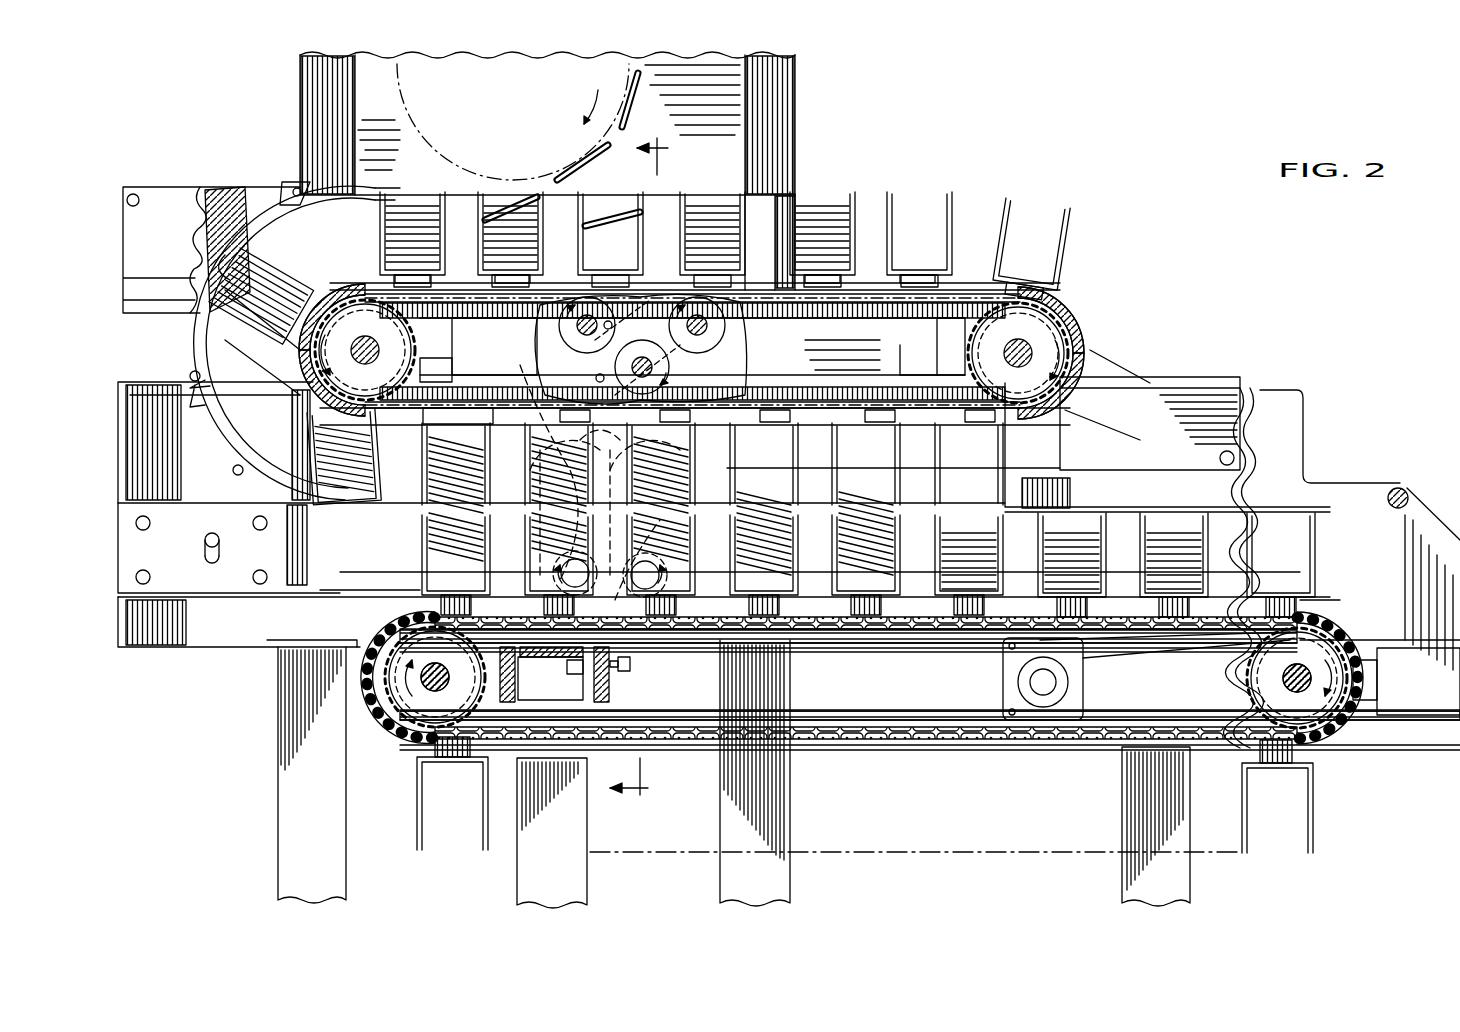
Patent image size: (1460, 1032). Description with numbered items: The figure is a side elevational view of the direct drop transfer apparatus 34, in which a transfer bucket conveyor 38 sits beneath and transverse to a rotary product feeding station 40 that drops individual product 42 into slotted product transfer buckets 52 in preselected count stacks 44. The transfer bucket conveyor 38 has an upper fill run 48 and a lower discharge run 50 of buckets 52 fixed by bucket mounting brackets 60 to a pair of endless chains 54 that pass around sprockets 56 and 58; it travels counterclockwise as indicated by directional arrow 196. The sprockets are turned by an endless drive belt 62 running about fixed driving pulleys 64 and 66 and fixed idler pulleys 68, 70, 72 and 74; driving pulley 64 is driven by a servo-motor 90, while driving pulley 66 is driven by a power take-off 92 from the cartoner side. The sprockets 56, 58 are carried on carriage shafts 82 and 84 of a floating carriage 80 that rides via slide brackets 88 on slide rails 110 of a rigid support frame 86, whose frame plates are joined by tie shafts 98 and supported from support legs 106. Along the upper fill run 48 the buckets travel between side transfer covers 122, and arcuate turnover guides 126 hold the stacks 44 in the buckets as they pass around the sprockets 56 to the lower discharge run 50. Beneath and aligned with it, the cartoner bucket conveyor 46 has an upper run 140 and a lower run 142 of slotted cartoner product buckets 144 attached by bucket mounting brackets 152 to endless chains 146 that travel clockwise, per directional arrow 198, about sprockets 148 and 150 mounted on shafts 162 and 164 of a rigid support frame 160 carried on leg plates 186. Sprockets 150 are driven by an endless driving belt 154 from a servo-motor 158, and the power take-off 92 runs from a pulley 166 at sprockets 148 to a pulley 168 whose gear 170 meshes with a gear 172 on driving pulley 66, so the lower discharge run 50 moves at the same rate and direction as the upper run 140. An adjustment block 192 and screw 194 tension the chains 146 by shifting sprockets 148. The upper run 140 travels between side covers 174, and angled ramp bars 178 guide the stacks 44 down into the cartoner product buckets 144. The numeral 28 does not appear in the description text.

The housing block 28 is at (442, 364).
The direct drop transfer apparatus 34 is at (1205, 220).
The transfer bucket conveyor 38 is at (1145, 304).
The product feeding station 40 is at (498, 100).
The individual product 42 is at (636, 102).
The preselected count stacks 44 is at (418, 200).
The cartoner bucket conveyor 46 is at (1328, 495).
The upper fill run 48 is at (1086, 252).
The lower discharge run 50 is at (1020, 485).
The product transfer buckets 52 is at (380, 224).
The endless chains 54 is at (820, 280).
The sprocket 56 is at (300, 385).
The sprocket 58 is at (1060, 340).
The bucket mounting brackets 60 is at (900, 280).
The endless drive belt 62 is at (578, 275).
The fixed driving pulley 64 is at (615, 375).
The fixed driving pulley 66 is at (668, 600).
The fixed idler pulley 68 is at (728, 330).
The fixed idler pulley 70 is at (560, 323).
The fixed idler pulley 72 is at (525, 392).
The fixed idler pulley 74 is at (715, 468).
The floating carriage 80 is at (835, 355).
The carriage shaft 82 is at (365, 345).
The carriage shaft 84 is at (1014, 345).
The rigid support frame 86 is at (1250, 380).
The slide brackets 88 is at (933, 372).
The servo-motor 90 is at (690, 276).
The power take-off 92 is at (420, 573).
The tie shafts 98 is at (1408, 492).
The support legs 106 is at (278, 833).
The slide rails 110 is at (1190, 380).
The side transfer covers 122 is at (217, 193).
The arcuate turnover guides 126 is at (285, 208).
The upper run 140 is at (1330, 548).
The lower run 142 is at (1325, 810).
The cartoner product buckets 144 is at (412, 528).
The endless chains 146 is at (853, 725).
The sprocket 148 is at (410, 715).
The sprocket 150 is at (1325, 650).
The bucket mounting brackets 152 is at (900, 643).
The endless driving belt 154 is at (1108, 650).
The servo-motor 158 is at (823, 728).
The rigid support frame 160 is at (210, 652).
The shaft 162 is at (430, 665).
The shaft 164 is at (1305, 690).
The pulley 166 is at (392, 648).
The pulley 168 is at (537, 576).
The gear 170 is at (576, 562).
The gear 172 is at (668, 578).
The side covers 174 is at (170, 470).
The angled ramp bars 178 is at (345, 520).
The leg plates 186 is at (585, 886).
The adjustment block 192 is at (561, 704).
The screw 194 is at (630, 672).
The directional arrow 196 is at (848, 178).
The directional arrow 198 is at (318, 604).